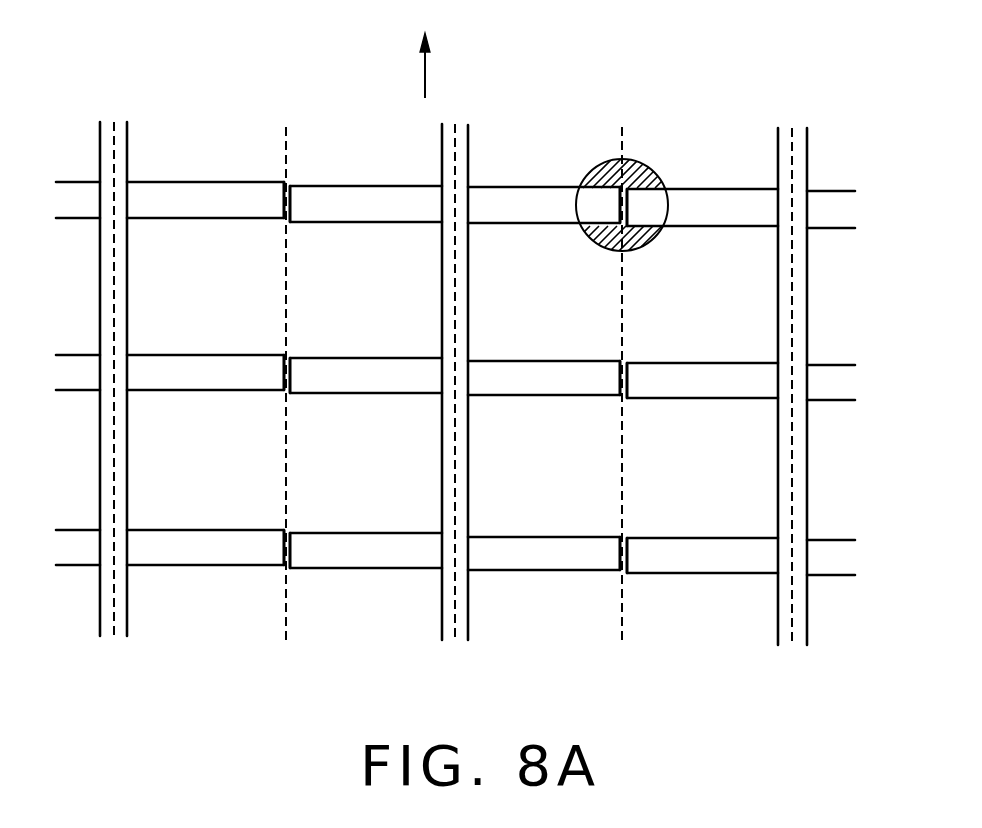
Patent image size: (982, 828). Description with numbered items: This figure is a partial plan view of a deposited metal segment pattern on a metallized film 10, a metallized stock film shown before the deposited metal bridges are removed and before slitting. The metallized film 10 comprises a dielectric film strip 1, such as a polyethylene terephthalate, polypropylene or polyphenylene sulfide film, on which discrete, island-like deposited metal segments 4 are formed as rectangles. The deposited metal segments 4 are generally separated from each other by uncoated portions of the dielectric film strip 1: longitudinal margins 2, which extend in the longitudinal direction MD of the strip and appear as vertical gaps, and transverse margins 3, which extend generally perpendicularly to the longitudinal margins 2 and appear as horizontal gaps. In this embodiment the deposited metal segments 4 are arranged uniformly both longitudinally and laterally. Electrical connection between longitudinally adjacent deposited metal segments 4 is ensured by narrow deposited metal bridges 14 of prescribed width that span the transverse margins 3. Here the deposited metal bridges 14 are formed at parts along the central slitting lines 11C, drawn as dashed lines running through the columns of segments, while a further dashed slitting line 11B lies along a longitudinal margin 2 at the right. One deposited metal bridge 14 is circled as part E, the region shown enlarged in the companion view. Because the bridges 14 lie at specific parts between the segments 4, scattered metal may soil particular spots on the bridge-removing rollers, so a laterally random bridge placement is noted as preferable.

The dielectric film strip 1 is at (68, 137).
The longitudinal margins 2 is at (118, 128).
The transverse margins 3 is at (197, 205).
The deposited metal segments 4 is at (65, 315).
The metallized film 10 is at (605, 72).
The slitting line 11B is at (800, 130).
The central slitting lines 11C is at (287, 133).
The deposited metal bridges 14 is at (290, 198).
The part E is at (587, 175).
The longitudinal direction MD is at (451, 65).